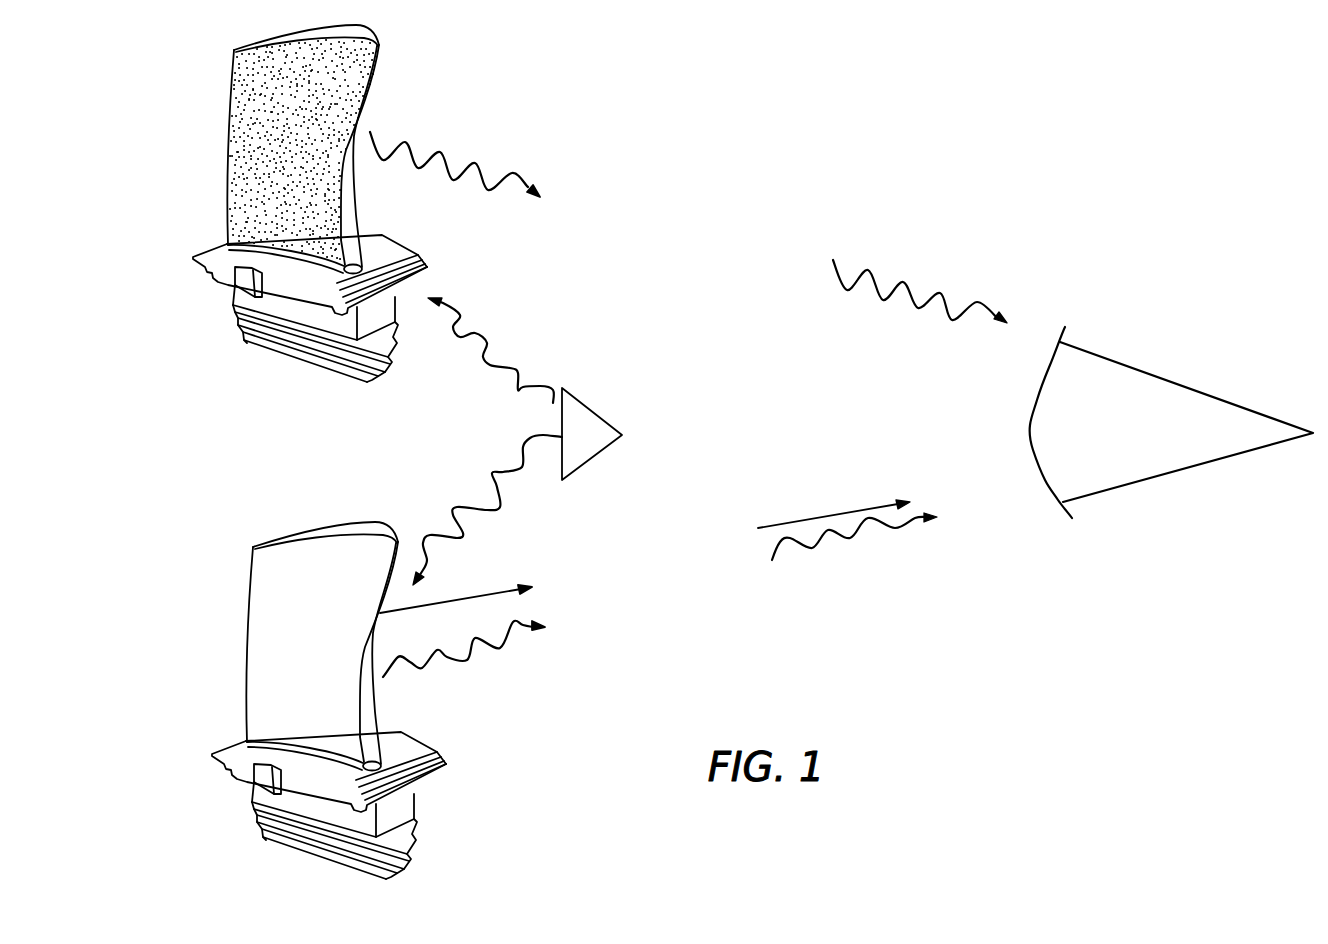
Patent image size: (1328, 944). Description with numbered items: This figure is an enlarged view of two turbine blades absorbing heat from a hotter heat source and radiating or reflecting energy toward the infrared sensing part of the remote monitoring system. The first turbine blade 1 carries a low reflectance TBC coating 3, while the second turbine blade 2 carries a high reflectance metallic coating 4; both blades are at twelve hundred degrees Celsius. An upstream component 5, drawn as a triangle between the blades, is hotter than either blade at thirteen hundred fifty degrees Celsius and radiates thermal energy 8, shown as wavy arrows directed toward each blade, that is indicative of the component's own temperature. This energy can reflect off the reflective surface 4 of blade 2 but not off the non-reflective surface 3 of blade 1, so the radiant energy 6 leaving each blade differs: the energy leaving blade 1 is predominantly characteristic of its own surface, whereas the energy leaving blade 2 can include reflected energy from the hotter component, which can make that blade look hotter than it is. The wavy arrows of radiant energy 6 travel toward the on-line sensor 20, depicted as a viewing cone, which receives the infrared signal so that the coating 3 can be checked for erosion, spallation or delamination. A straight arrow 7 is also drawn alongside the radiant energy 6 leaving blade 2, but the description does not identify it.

The turbine blade 1 is at (178, 155).
The turbine blade 2 is at (371, 700).
The low reflectance TBC coating 3 is at (363, 97).
The high reflectance metallic coating 4 is at (337, 646).
The upstream component 5 is at (592, 434).
The radiant energy 6 is at (947, 300).
The incident beam 7 is at (830, 513).
The thermal energy 8 is at (518, 390).
The on-line sensor 20 is at (1185, 387).